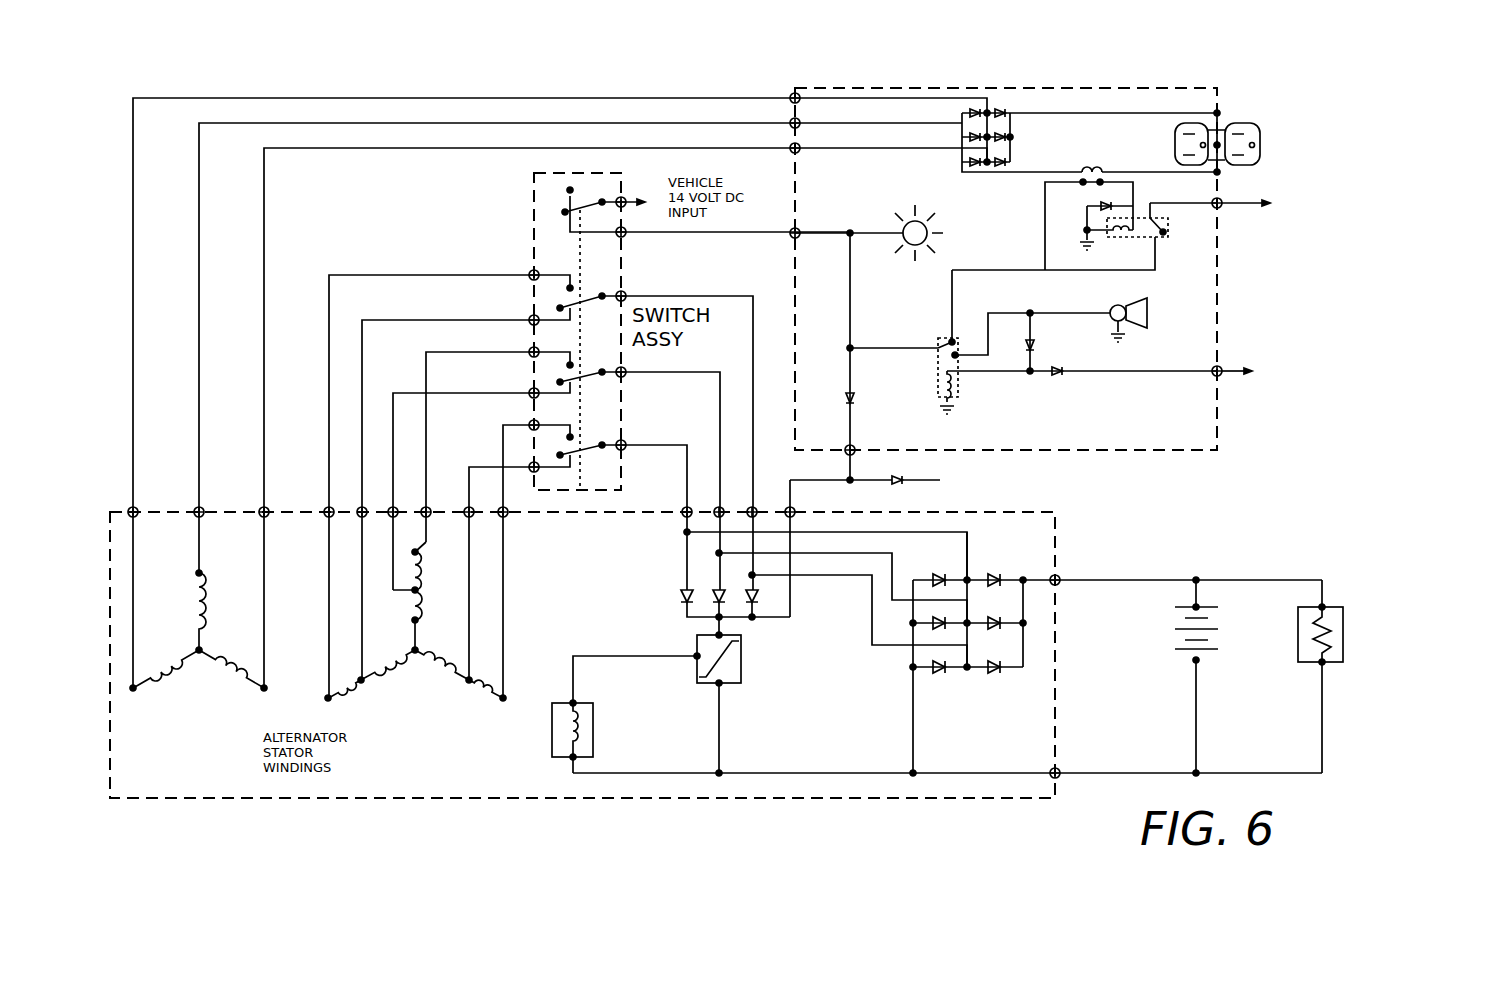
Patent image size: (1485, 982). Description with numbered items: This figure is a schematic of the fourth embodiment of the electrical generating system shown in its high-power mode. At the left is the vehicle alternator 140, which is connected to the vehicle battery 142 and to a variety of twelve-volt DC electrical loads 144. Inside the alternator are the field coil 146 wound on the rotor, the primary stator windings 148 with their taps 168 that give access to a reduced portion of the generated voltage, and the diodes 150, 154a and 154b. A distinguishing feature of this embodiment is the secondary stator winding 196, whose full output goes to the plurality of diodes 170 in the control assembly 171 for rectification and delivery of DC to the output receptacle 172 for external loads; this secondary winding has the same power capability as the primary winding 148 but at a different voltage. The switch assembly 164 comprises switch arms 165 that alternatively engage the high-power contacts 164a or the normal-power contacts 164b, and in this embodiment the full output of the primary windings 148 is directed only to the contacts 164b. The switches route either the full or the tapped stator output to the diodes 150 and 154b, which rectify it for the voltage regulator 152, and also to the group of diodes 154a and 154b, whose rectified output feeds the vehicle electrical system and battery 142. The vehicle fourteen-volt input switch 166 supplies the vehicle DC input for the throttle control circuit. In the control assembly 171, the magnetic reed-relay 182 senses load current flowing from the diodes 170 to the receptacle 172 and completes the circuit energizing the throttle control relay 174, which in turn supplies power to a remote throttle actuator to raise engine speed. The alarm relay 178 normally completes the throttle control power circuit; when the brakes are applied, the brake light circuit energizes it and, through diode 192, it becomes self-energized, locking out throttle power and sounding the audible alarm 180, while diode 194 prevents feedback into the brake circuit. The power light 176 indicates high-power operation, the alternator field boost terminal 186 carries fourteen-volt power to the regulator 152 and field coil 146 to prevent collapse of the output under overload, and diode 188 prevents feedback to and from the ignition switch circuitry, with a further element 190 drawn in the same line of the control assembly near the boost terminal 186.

The vehicle alternator 140 is at (531, 821).
The vehicle battery 142 is at (1191, 673).
The 12-volt DC electrical loads 144 is at (1350, 627).
The field coil 146 is at (586, 700).
The stator windings 148 is at (420, 672).
The diodes 150 is at (678, 597).
The voltage regulator 152 is at (735, 690).
The diodes 154a is at (1174, 555).
The diodes 154b is at (893, 732).
The switch assembly 164 is at (627, 278).
The high-power contacts 164a is at (704, 403).
The normal-power contacts 164b is at (704, 253).
The switch arms 165 is at (590, 451).
The vehicle 14-volt input switch 166 is at (562, 207).
The taps 168 is at (428, 592).
The diodes 170 is at (1020, 137).
The control assembly 171 is at (1262, 326).
The output receptacle 172 is at (1233, 123).
The throttle control relay 174 is at (1172, 238).
The power light 176 is at (925, 211).
The alarm relay 178 is at (980, 385).
The audible alarm 180 is at (1120, 306).
The magnetic reed-relay 182 is at (1086, 172).
The alternator field boost terminal 186 is at (857, 452).
The diode 188 is at (886, 483).
The diode 190 is at (866, 374).
The diode 192 is at (1038, 348).
The diode 194 is at (1065, 379).
The secondary stator winding 196 is at (197, 668).